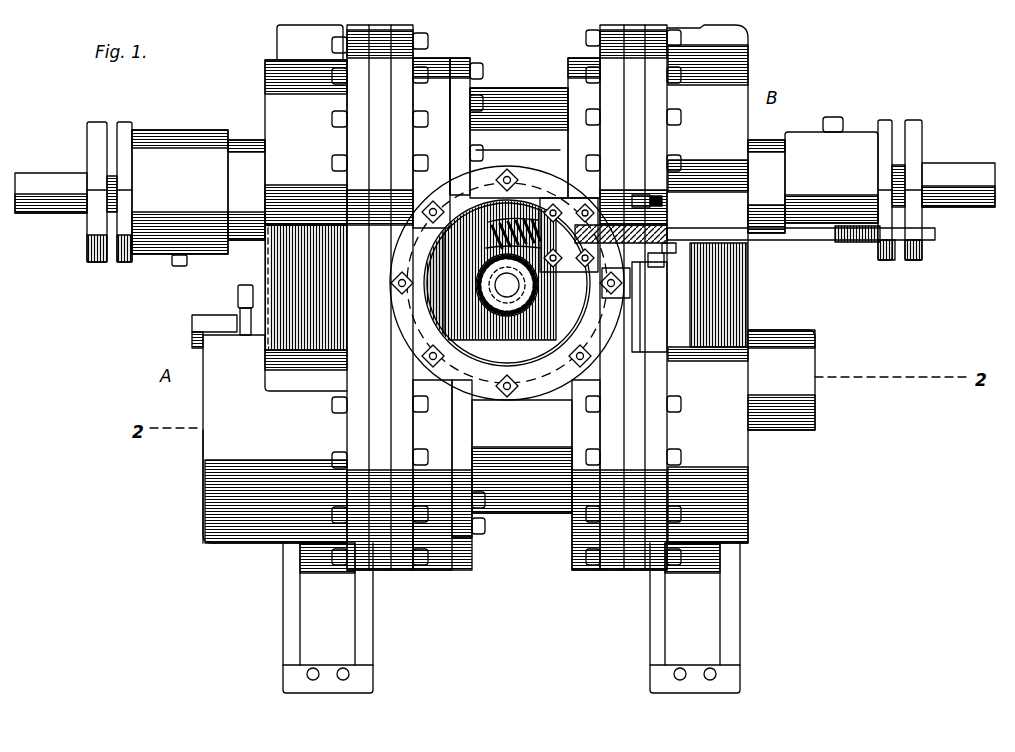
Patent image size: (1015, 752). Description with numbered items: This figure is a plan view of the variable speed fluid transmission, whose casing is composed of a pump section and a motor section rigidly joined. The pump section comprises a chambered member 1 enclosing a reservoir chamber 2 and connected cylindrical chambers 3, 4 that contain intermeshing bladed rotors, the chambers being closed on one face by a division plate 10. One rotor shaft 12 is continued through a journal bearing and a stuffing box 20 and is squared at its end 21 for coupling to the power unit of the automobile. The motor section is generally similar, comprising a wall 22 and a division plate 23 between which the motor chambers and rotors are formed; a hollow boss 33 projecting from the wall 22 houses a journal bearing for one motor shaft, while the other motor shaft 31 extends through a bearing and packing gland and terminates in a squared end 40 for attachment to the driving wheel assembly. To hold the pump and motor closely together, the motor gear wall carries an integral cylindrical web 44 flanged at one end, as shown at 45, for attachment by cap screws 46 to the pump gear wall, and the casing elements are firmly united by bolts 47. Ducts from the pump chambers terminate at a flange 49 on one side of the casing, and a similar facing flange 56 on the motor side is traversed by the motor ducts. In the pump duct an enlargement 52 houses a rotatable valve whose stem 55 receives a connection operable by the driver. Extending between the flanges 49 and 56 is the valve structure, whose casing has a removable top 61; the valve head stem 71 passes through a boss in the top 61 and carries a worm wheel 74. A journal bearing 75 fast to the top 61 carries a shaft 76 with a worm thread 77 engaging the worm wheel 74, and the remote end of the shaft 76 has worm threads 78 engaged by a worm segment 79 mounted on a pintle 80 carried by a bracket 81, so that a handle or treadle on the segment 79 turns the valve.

The chambered member 1 is at (205, 463).
The chamber 2 is at (272, 439).
The chamber 3 is at (362, 297).
The chamber 4 is at (306, 125).
The division plate 10 is at (378, 410).
The shaft 12 is at (84, 218).
The stuffing box 20 is at (180, 198).
The squared end 21 is at (40, 210).
The wall 22 is at (750, 457).
The division plate 23 is at (632, 437).
The shaft 31 is at (930, 165).
The hollow boss 33 is at (815, 402).
The squared end 40 is at (975, 197).
The cylindrical web 44 is at (533, 92).
The flange 45 is at (470, 540).
The cap screws 46 is at (482, 74).
The bolts 47 is at (418, 120).
The flange 49 is at (386, 262).
The enlargement 52 is at (250, 296).
The stem 55 is at (192, 323).
The flange 56 is at (636, 322).
The removable top 61 is at (507, 283).
The stem 71 is at (507, 285).
The worm wheel 74 is at (507, 285).
The journal bearing 75 is at (569, 235).
The shaft 76 is at (610, 290).
The worm thread 77 is at (525, 220).
The worm threads 78 is at (668, 250).
The worm segment 79 is at (604, 222).
The pintle 80 is at (655, 200).
The bracket 81 is at (660, 265).